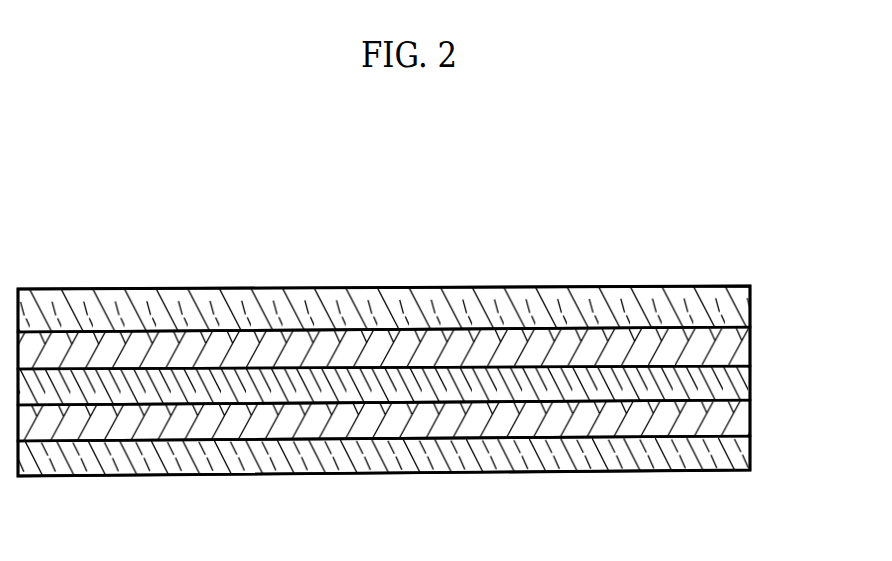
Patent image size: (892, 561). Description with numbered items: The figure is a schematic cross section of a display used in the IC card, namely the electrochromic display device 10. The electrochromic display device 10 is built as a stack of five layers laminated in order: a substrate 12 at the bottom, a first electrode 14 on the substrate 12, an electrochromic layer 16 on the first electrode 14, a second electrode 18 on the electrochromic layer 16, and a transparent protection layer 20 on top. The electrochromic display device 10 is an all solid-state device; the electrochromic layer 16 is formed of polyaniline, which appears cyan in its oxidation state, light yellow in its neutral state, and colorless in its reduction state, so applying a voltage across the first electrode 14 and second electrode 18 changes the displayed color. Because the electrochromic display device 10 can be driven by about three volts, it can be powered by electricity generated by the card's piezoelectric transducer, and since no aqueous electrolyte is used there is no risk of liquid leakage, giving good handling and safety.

The electrochromic display device 10 is at (441, 311).
The substrate 12 is at (752, 456).
The first electrode 14 is at (752, 417).
The electrochromic layer 16 is at (752, 378).
The second electrode 18 is at (752, 338).
The transparent protection layer 20 is at (750, 305).